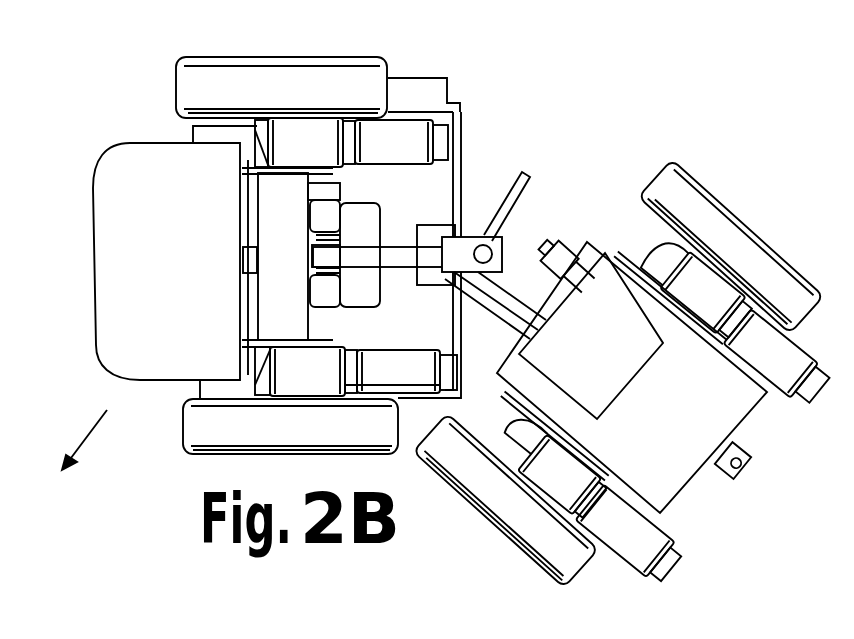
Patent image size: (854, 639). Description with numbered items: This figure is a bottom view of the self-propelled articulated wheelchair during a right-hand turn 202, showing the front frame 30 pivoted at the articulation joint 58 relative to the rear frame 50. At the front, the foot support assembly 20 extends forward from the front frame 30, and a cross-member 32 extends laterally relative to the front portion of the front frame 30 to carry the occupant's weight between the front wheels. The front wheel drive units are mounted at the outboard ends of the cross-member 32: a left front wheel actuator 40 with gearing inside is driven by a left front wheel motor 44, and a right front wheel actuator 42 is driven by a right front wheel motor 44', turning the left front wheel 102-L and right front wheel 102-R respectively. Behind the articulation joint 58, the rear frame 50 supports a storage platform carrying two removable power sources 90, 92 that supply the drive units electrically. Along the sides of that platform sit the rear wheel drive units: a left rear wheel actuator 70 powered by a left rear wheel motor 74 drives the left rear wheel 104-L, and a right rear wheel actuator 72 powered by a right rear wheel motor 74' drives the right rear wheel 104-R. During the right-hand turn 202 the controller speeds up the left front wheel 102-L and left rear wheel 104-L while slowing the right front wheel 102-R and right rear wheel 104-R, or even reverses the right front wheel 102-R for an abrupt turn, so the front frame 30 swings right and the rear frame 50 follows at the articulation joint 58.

The right front wheel 102-R is at (214, 92).
The left front wheel 102-L is at (200, 434).
The foot support assembly 20 is at (180, 210).
The left front wheel actuator 40 is at (294, 153).
The left front wheel motor 44 is at (401, 142).
The right front wheel actuator 42 is at (297, 385).
The right front wheel motor 44' is at (407, 371).
The cross-member 32 is at (267, 218).
The front frame 30 is at (402, 255).
The articulation joint 58 is at (517, 225).
The rear frame 50 is at (523, 277).
The power source 92 is at (585, 367).
The power source 90 is at (655, 425).
The left rear wheel actuator 70 is at (691, 305).
The left rear wheel motor 74 is at (778, 359).
The right rear wheel actuator 72 is at (542, 482).
The right rear wheel motor 74' is at (631, 535).
The right rear wheel 104-R is at (692, 203).
The left rear wheel 104-L is at (570, 560).
The right-hand turn 202 is at (90, 437).